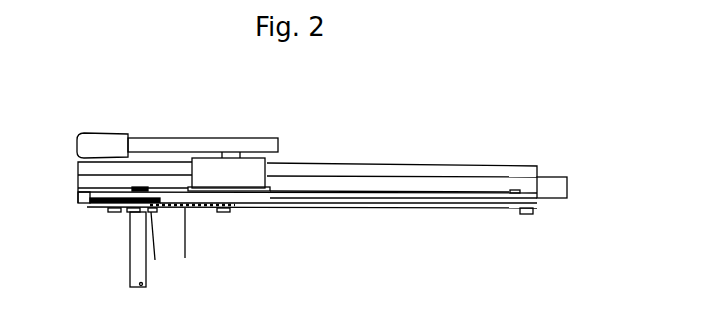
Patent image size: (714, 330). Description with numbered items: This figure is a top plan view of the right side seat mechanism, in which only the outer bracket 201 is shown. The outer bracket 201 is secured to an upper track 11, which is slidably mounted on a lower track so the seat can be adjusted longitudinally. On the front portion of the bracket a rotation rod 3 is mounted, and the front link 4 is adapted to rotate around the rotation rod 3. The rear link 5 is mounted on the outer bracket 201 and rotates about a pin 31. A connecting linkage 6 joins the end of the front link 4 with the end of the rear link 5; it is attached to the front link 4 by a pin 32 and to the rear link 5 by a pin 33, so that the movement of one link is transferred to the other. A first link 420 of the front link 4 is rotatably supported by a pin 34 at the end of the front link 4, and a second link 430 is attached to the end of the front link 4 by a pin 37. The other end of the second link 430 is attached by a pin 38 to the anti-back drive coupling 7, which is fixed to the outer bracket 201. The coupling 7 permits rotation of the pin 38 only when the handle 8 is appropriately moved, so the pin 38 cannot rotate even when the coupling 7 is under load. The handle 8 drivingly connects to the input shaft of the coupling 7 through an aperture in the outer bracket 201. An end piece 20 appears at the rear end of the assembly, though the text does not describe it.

The rotation rod 3 is at (130, 275).
The front link 4 is at (78, 193).
The rear link 5 is at (457, 207).
The connecting linkage 6 is at (387, 208).
The anti-back drive coupling 7 is at (268, 168).
The handle 8 is at (102, 133).
The upper track 11 is at (493, 165).
The end block 20 is at (560, 200).
The pin 31 is at (515, 190).
The pin 32 is at (155, 260).
The pin 33 is at (527, 214).
The pin 34 is at (93, 210).
The pin 37 is at (127, 213).
The pin 38 is at (220, 212).
The outer bracket 201 is at (578, 193).
The first link 420 is at (95, 207).
The second link 430 is at (178, 246).